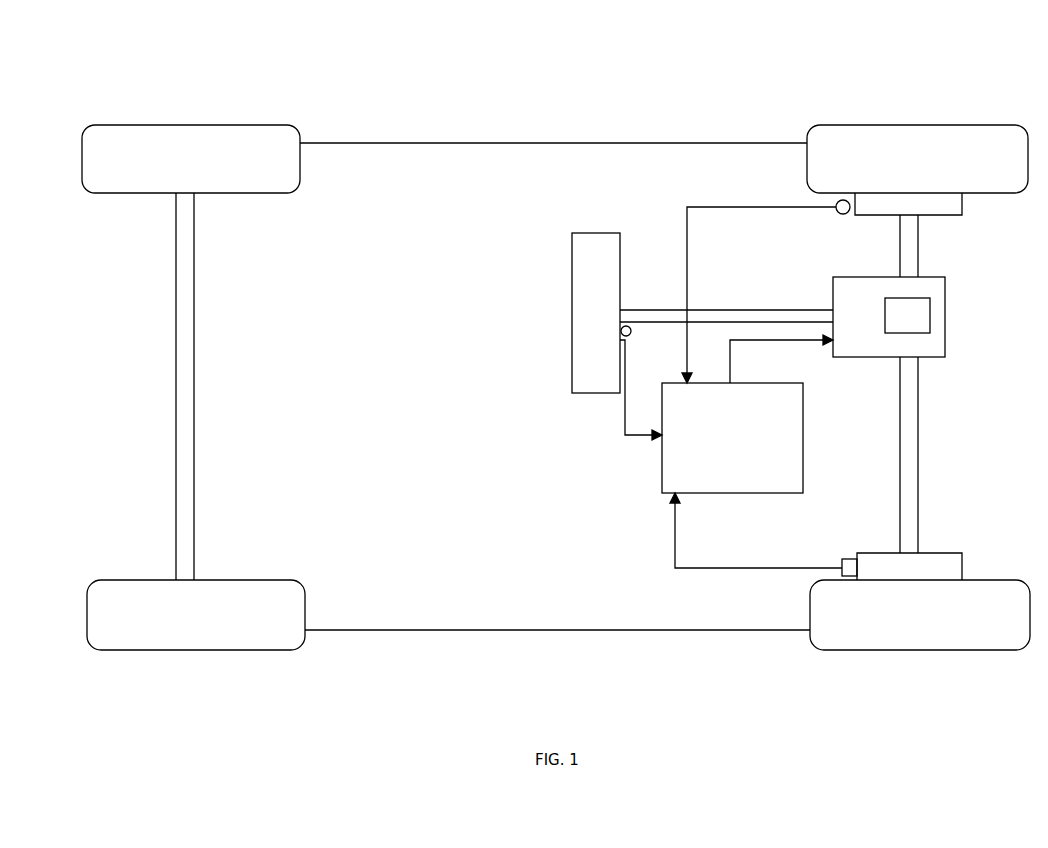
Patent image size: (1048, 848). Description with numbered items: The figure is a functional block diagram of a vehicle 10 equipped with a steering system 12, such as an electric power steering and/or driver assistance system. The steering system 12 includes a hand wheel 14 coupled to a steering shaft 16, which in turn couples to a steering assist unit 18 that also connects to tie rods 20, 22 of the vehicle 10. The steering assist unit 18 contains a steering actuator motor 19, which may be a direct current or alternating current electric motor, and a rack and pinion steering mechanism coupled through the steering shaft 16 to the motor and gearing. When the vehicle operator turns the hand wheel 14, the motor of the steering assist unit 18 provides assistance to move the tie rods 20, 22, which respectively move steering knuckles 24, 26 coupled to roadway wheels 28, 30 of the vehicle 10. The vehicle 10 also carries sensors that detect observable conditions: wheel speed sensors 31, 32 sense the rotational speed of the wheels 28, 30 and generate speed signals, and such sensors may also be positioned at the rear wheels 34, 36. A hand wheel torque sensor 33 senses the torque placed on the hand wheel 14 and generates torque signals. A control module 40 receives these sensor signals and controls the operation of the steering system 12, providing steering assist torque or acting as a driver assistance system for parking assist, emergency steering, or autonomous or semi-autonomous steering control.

The vehicle 10 is at (596, 44).
The steering system 12 is at (699, 185).
The hand wheel 14 is at (593, 233).
The steering shaft 16 is at (697, 307).
The steering assist unit 18 is at (945, 312).
The steering actuator motor 19 is at (928, 326).
The tie rod 20 is at (918, 256).
The tie rod 22 is at (918, 425).
The steering knuckle 24 is at (962, 200).
The steering knuckle 26 is at (883, 553).
The roadway wheel 28 is at (952, 125).
The roadway wheel 30 is at (962, 572).
The wheel speed sensor 31 is at (843, 214).
The wheel speed sensor 32 is at (850, 556).
The hand wheel torque sensor 33 is at (628, 326).
The rear wheel 34 is at (255, 125).
The rear wheel 36 is at (250, 580).
The control module 40 is at (747, 383).